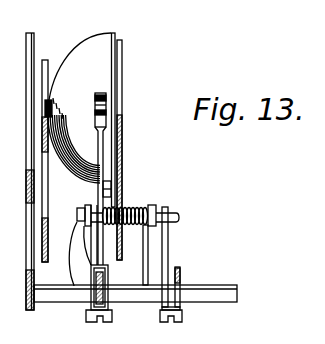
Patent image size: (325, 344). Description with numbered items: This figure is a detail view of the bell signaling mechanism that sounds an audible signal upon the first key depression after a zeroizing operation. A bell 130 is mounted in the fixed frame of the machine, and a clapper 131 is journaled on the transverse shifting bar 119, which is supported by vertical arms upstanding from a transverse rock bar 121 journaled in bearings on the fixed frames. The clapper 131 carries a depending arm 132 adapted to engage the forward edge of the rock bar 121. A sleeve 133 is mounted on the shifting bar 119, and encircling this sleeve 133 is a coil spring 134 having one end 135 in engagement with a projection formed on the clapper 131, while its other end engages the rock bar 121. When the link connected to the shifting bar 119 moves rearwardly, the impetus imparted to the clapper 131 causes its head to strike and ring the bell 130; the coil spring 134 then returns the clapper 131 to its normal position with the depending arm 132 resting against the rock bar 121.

The bell 130 is at (98, 62).
The clapper 131 is at (105, 142).
The end of coil spring 135 is at (114, 184).
The coil spring 134 is at (130, 212).
The sleeve 133 is at (152, 207).
The shifting bar 119 is at (175, 223).
The rock bar 121 is at (208, 297).
The depending arm 132 is at (88, 294).